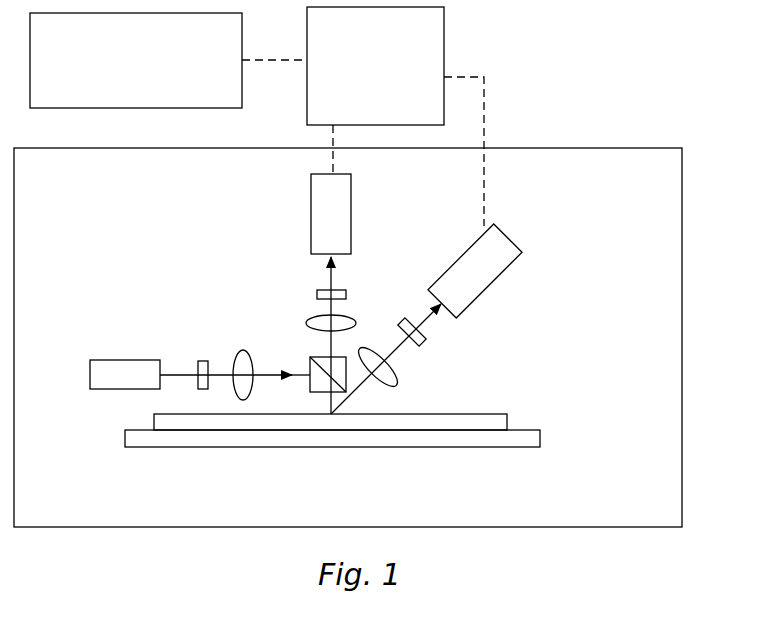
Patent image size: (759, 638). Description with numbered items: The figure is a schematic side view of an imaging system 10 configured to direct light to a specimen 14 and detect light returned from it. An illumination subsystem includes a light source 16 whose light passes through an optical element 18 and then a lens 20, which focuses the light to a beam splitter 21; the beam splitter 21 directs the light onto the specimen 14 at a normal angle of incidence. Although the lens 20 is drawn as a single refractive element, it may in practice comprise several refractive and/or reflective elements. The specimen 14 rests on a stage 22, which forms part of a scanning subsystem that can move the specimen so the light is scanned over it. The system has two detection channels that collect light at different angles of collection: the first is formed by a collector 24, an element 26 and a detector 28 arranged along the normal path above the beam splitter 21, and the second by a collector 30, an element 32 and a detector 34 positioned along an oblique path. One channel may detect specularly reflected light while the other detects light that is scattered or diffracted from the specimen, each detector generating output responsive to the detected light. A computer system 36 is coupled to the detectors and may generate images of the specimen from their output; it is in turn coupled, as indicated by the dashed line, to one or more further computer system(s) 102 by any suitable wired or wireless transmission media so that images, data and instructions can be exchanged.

The imaging system 10 is at (379, 332).
The specimen 14 is at (154, 417).
The light source 16 is at (99, 361).
The optical element 18 is at (204, 360).
The lens 20 is at (242, 350).
The beam splitter 21 is at (322, 357).
The stage 22 is at (125, 437).
The collector 24 is at (312, 318).
The element 26 is at (316, 292).
The detector 28 is at (310, 218).
The collector 30 is at (395, 382).
The element 32 is at (423, 342).
The detector 34 is at (505, 273).
The computer system 36 is at (363, 105).
The computer system(s) 102 is at (121, 100).